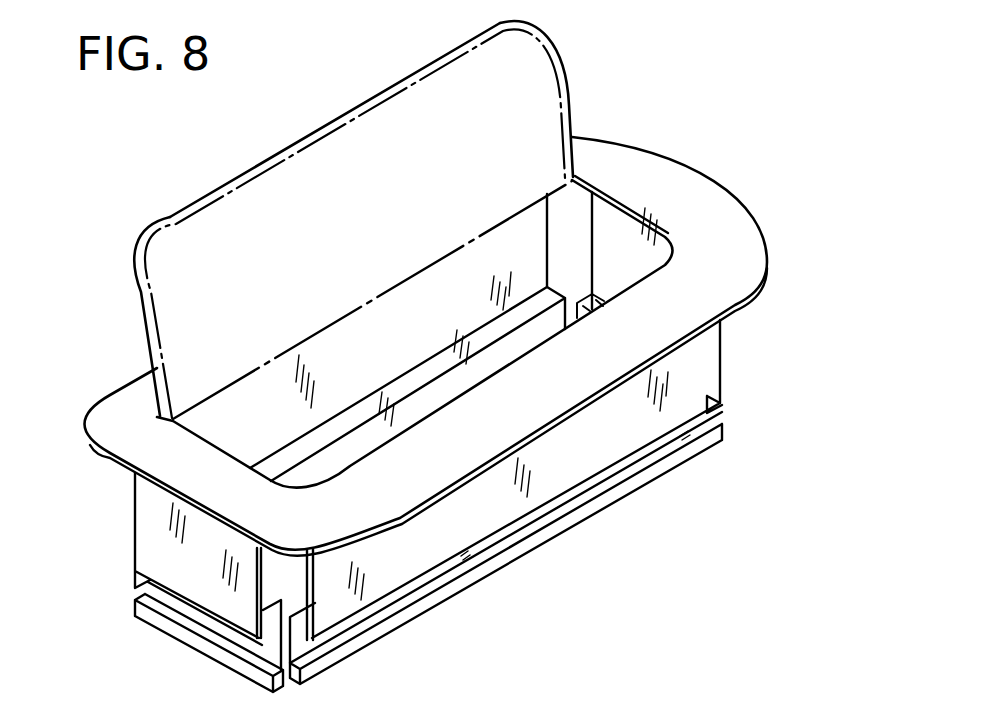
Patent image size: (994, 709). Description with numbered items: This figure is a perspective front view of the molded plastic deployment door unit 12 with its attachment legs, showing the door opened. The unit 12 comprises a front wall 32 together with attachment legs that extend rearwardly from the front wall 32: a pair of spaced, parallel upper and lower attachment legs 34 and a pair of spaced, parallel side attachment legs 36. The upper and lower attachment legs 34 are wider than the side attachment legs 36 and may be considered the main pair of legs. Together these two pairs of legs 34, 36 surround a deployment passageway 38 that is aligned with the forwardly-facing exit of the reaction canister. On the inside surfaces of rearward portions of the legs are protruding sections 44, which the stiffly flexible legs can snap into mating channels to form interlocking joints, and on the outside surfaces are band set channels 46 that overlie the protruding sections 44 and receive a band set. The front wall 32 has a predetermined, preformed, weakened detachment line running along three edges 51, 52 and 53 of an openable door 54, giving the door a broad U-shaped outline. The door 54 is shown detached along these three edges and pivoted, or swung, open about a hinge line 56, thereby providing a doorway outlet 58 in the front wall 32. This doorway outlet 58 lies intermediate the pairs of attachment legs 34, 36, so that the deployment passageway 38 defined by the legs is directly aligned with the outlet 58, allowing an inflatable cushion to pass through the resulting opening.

The molded plastic deployment door unit 12 is at (690, 120).
The front wall 32 is at (733, 233).
The upper and lower attachment legs 34 is at (362, 366).
The side attachment legs 36 is at (633, 226).
The deployment passageway 38 is at (317, 466).
The protruding sections 44 is at (483, 360).
The band set channels 46 is at (185, 612).
The edge of openable door 51 is at (148, 318).
The edge of openable door 52 is at (317, 127).
The edge of openable door 53 is at (561, 72).
The openable door 54 is at (358, 206).
The hinge line 56 is at (429, 270).
The doorway outlet 58 is at (568, 227).